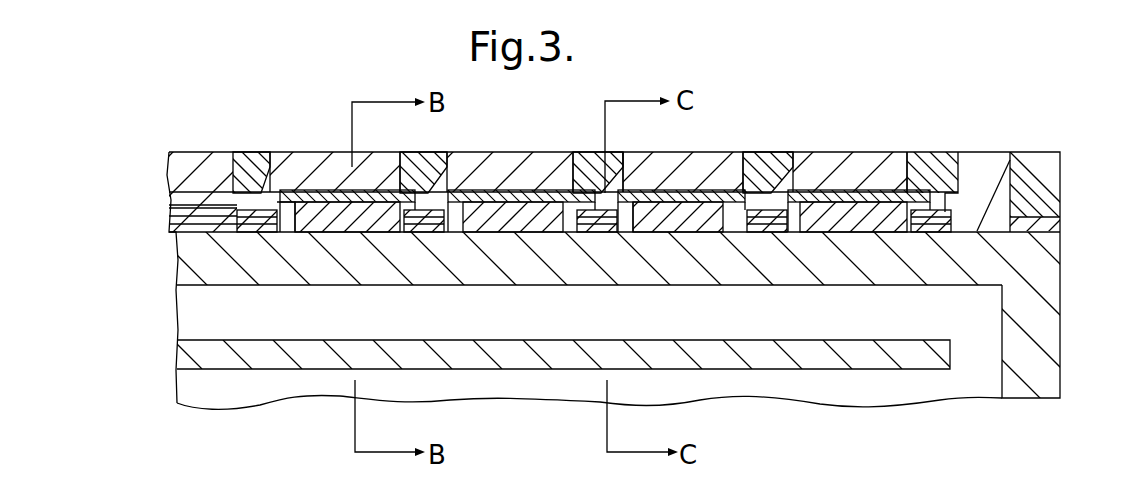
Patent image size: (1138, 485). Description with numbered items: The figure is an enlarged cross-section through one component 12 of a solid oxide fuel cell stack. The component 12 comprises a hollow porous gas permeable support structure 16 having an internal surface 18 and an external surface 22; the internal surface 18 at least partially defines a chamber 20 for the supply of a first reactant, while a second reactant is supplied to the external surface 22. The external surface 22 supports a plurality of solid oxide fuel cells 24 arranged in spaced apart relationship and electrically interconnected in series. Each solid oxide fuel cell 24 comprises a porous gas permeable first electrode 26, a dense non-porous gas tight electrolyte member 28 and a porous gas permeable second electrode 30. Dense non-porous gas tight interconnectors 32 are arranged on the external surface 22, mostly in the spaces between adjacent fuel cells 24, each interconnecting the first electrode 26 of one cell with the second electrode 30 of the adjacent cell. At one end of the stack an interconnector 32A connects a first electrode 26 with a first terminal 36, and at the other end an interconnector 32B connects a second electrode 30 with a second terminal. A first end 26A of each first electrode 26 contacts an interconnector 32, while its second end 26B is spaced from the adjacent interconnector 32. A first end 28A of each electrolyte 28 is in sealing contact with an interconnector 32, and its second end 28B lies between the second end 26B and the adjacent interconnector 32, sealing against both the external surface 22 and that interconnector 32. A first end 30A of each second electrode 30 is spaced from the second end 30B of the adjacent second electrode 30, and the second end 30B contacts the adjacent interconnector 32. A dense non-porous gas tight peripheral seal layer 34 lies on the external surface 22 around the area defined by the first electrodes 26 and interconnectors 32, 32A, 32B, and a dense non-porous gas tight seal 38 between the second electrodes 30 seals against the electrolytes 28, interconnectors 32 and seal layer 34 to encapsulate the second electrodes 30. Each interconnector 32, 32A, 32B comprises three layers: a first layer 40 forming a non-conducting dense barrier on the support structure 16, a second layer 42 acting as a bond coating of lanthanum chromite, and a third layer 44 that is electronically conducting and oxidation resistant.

The component 12 is at (990, 131).
The hollow porous gas permeable support structure 16 is at (810, 262).
The internal surface 18 is at (897, 270).
The chamber 20 is at (701, 331).
The external surface 22 is at (510, 190).
The solid oxide fuel cell 24 is at (291, 146).
The porous gas permeable first electrode 26 is at (332, 232).
The first end of first electrode 26A is at (723, 167).
The second end of first electrode 26B is at (645, 240).
The dense non-porous gas tight electrolyte member 28 is at (310, 192).
The first end of electrolyte 28A is at (232, 192).
The second end of electrolyte 28B is at (292, 232).
The porous gas permeable second electrode 30 is at (337, 167).
The first end of second electrode 30A is at (745, 160).
The second end of second electrode 30B is at (610, 193).
The dense non-porous gas tight interconnector 32 is at (433, 245).
The dense non-porous gas tight interconnector 32A is at (942, 232).
The dense non-porous gas tight interconnector 32B is at (240, 238).
The dense non-porous gas tight peripheral seal layer 34 is at (1060, 207).
The first terminal 36 is at (1003, 160).
The dense non-porous gas tight seal 38 is at (243, 160).
The first layer 40 is at (237, 225).
The second layer 42 is at (233, 217).
The third layer 44 is at (237, 210).